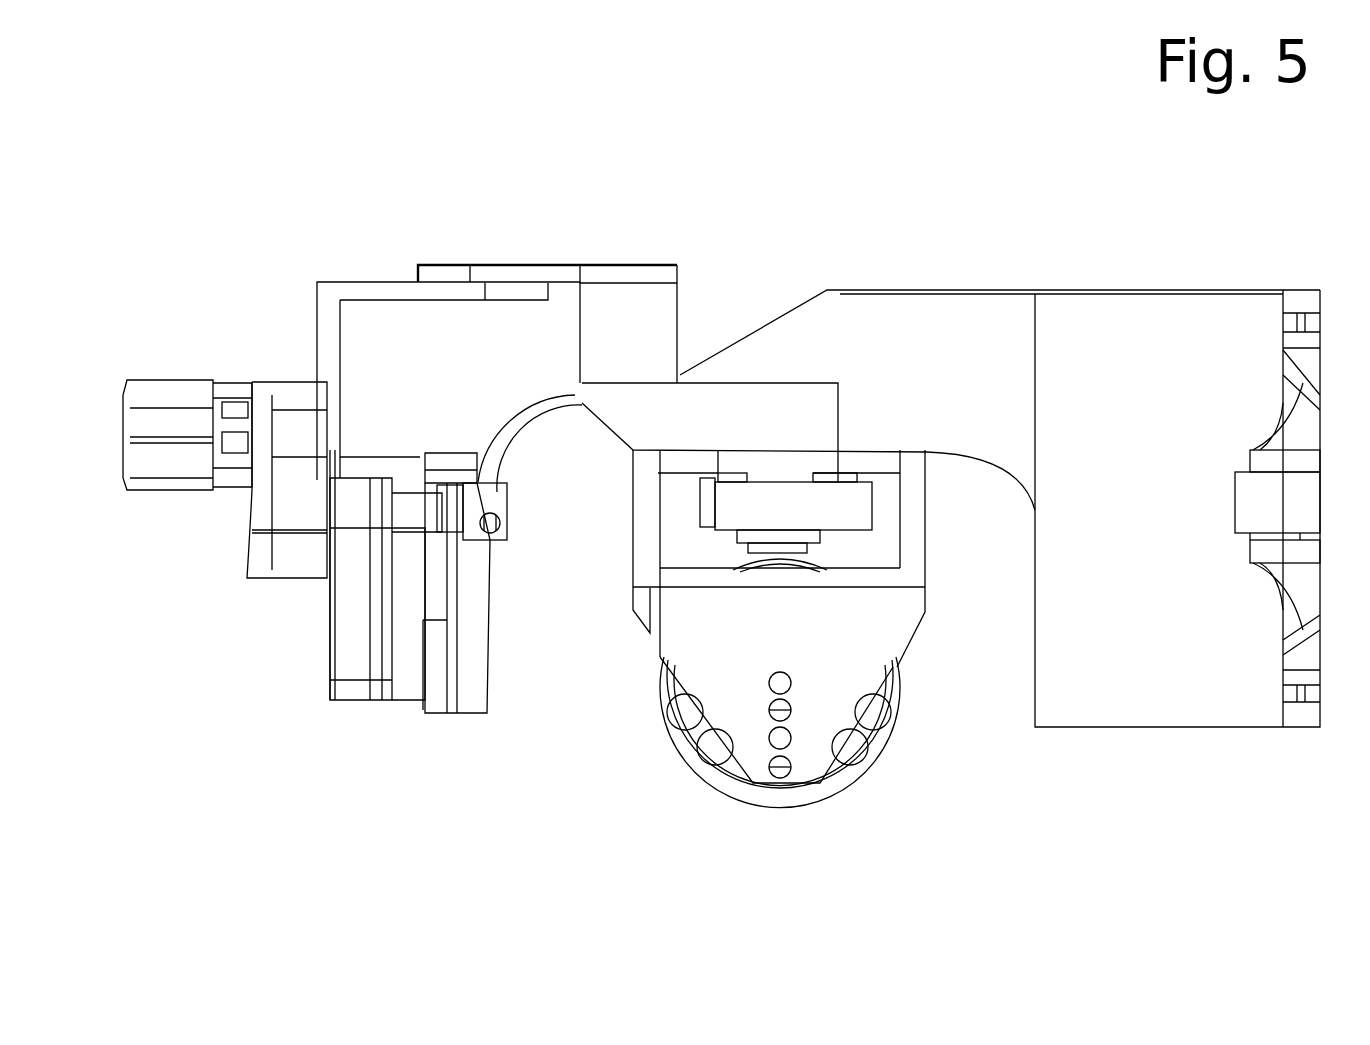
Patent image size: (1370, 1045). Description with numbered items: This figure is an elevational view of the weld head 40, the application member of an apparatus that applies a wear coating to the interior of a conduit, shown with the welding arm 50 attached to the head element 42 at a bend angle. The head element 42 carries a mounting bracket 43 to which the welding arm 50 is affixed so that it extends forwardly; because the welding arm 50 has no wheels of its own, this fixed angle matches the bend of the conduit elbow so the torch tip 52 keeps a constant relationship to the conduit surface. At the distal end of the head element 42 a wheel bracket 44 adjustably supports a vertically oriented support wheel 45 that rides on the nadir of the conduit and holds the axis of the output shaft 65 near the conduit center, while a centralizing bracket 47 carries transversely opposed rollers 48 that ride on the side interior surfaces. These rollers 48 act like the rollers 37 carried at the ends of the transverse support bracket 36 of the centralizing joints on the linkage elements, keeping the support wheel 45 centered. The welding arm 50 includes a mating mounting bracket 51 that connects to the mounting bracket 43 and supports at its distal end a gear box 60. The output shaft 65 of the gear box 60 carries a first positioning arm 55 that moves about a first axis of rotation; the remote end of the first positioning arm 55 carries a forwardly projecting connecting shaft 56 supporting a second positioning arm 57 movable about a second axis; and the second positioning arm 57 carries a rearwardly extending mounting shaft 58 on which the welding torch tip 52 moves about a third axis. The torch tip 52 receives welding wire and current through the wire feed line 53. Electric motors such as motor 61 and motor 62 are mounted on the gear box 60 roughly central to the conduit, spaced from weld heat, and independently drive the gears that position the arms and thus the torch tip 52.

The support bracket 36 is at (1275, 465).
The rollers 37 is at (1258, 515).
The weld head 40 is at (745, 122).
The head element 42 is at (1143, 313).
The mounting bracket 43 is at (548, 270).
The wheel bracket 44 is at (847, 642).
The support wheel 45 is at (837, 790).
The centralizing bracket 47 is at (820, 545).
The rollers 48 is at (840, 507).
The welding arm 50 is at (222, 270).
The mating mounting bracket 51 is at (372, 287).
The welding torch tip 52 is at (497, 547).
The wire feed line 53 is at (510, 438).
The first positioning arm 55 is at (470, 615).
The connecting shaft 56 is at (398, 680).
The second positioning arm 57 is at (340, 630).
The mounting shaft 58 is at (408, 510).
The gear box 60 is at (285, 560).
The electric motor 61 is at (180, 470).
The electric motor 62 is at (152, 385).
The output shaft 65 is at (360, 462).